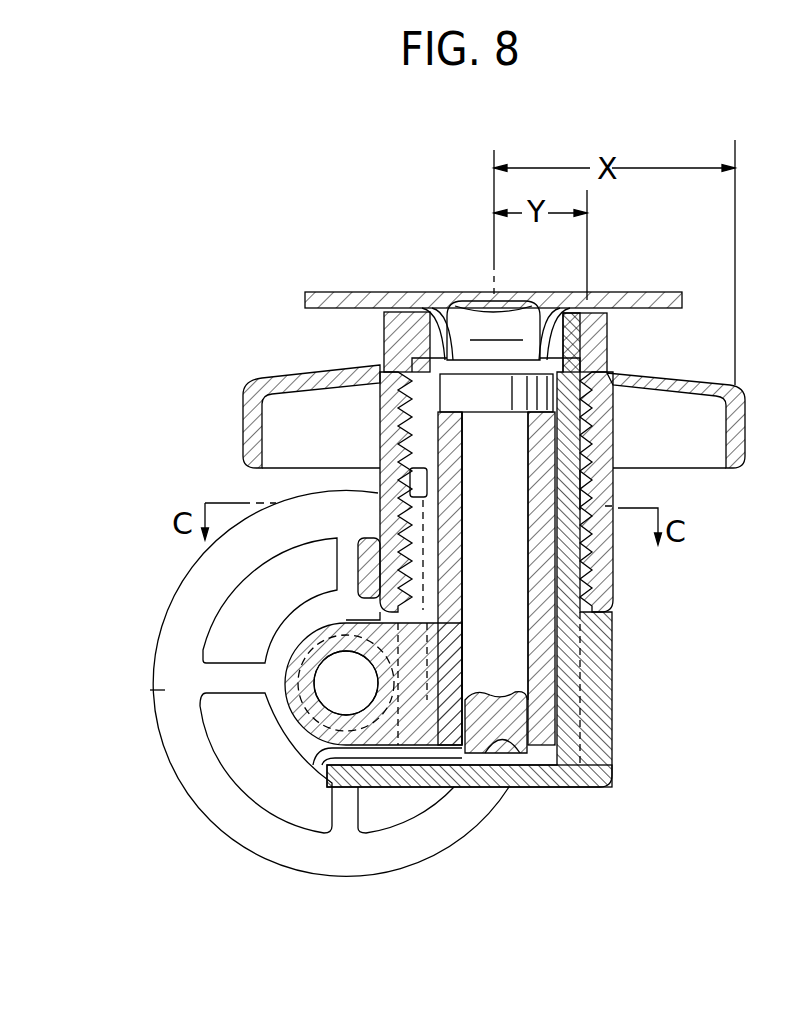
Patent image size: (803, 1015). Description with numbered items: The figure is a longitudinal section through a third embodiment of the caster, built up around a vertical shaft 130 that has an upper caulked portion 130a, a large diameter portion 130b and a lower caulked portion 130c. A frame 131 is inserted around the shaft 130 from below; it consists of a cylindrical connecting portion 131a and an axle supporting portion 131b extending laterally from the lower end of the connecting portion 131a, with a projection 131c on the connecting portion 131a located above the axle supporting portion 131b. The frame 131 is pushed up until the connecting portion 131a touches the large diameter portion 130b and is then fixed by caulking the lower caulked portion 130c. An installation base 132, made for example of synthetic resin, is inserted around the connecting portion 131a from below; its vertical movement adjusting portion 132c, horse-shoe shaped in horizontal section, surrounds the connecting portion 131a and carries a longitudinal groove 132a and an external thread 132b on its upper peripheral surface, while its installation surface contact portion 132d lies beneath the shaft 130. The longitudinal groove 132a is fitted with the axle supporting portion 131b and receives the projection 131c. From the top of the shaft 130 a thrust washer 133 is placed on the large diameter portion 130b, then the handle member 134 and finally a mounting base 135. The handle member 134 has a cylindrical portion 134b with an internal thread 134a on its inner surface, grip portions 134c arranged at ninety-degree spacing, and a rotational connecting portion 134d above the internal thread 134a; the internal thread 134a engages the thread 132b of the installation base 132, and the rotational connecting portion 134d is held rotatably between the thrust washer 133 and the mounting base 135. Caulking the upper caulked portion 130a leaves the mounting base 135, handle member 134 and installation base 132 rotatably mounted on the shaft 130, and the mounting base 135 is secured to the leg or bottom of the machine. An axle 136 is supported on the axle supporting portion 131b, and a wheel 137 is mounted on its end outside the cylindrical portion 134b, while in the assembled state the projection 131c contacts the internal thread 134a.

The shaft 130 is at (548, 541).
The upper caulked portion 130a is at (533, 314).
The large diameter portion 130b is at (602, 362).
The lower caulked portion 130c is at (533, 755).
The frame 131 is at (473, 612).
The connecting portion 131a is at (540, 474).
The axle supporting portion 131b is at (318, 757).
The projection 131c is at (380, 514).
The installation base 132 is at (494, 591).
The longitudinal groove 132a is at (380, 460).
The thread 132b is at (613, 484).
The vertical movement adjusting portion 132c is at (613, 422).
The installation surface contact portion 132d is at (517, 790).
The thrust washer 133 is at (453, 362).
The handle member 134 is at (479, 528).
The internal thread 134a is at (440, 590).
The cylindrical portion 134b is at (377, 558).
The grip portion 134c is at (244, 428).
The rotational connecting portion 134d is at (385, 321).
The mounting base 135 is at (662, 292).
The axle 136 is at (333, 698).
The wheel 137 is at (158, 690).